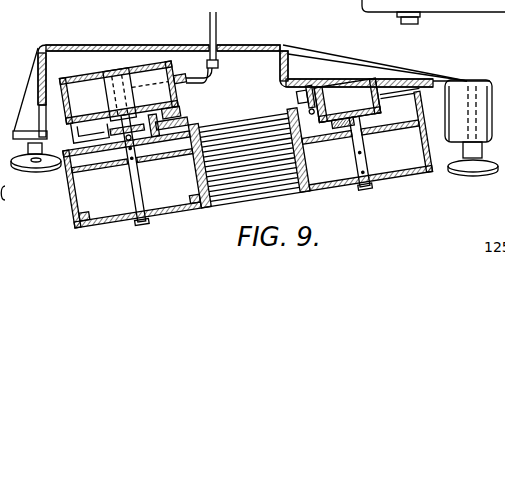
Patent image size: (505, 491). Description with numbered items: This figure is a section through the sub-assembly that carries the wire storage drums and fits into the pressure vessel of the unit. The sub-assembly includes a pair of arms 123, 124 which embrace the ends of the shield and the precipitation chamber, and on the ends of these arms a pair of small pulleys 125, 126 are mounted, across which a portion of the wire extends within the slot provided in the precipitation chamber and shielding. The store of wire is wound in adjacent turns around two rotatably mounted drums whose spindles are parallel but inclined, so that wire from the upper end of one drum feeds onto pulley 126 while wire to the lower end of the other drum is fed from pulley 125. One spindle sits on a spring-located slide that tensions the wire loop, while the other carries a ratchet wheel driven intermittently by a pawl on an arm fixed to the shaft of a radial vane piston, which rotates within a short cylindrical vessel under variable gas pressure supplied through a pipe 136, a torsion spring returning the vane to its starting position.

The arm 123 is at (483, 96).
The arm 124 is at (27, 113).
The pulley 125 is at (43, 170).
The pulley 126 is at (461, 173).
The pipe 136 is at (217, 28).